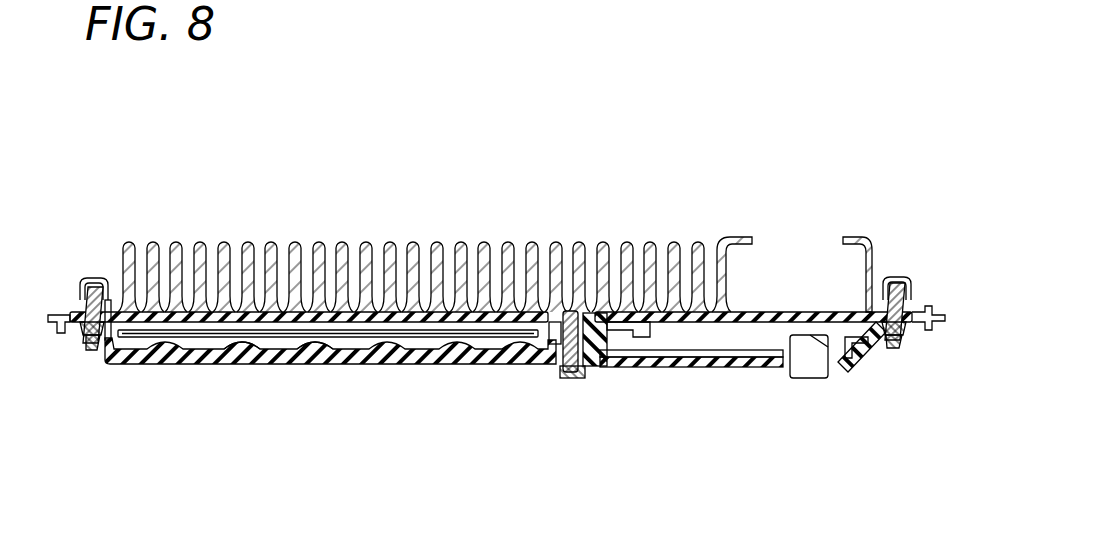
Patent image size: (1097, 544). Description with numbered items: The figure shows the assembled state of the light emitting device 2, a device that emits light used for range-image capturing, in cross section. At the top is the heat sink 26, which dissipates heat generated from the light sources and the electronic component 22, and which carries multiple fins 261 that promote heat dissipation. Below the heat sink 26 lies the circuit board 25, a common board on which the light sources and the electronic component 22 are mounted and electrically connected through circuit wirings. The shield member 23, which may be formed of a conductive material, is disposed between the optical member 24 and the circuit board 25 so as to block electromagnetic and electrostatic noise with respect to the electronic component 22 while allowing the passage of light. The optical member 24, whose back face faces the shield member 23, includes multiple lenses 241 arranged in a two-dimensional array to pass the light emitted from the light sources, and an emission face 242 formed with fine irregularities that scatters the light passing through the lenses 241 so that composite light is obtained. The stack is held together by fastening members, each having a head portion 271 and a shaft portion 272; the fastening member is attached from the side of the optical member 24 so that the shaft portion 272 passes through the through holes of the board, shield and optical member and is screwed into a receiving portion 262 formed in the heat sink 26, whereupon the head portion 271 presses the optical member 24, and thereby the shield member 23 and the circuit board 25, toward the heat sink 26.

The light emitting device 2 is at (315, 186).
The electronic component 22 is at (634, 328).
The shield member 23 is at (402, 338).
The optical member 24 is at (848, 370).
The lenses 241 is at (313, 349).
The emission face 242 is at (484, 364).
The circuit board 25 is at (766, 312).
The heat sink 26 is at (876, 242).
The fins 261 is at (508, 243).
The receiving portion 262 is at (92, 280).
The head portion 271 is at (88, 347).
The shaft portion 272 is at (84, 290).